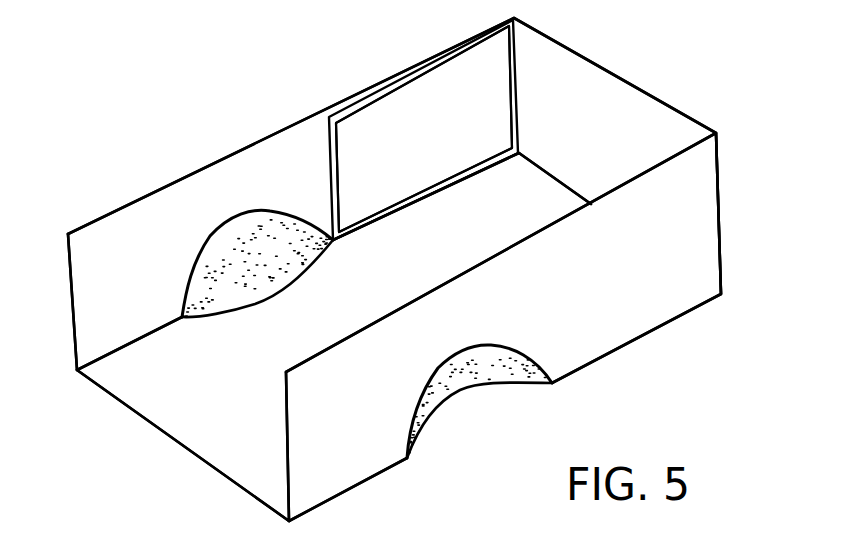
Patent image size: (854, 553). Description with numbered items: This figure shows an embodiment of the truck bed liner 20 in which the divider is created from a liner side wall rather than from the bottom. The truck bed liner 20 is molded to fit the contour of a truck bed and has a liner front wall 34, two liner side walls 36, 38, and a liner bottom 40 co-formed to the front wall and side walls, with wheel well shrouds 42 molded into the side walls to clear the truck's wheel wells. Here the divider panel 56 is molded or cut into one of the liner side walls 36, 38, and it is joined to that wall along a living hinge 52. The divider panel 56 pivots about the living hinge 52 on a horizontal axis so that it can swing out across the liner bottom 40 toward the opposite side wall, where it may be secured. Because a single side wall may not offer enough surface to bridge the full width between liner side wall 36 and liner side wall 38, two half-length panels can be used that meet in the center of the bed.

The truck bed liner 20 is at (263, 124).
The liner front wall 34 is at (651, 115).
The liner side wall 36 is at (135, 229).
The liner side wall 38 is at (617, 330).
The liner bottom 40 is at (178, 408).
The wheel well shrouds 42 is at (245, 254).
The living hinge 52 is at (329, 132).
The divider panel 56 is at (425, 97).